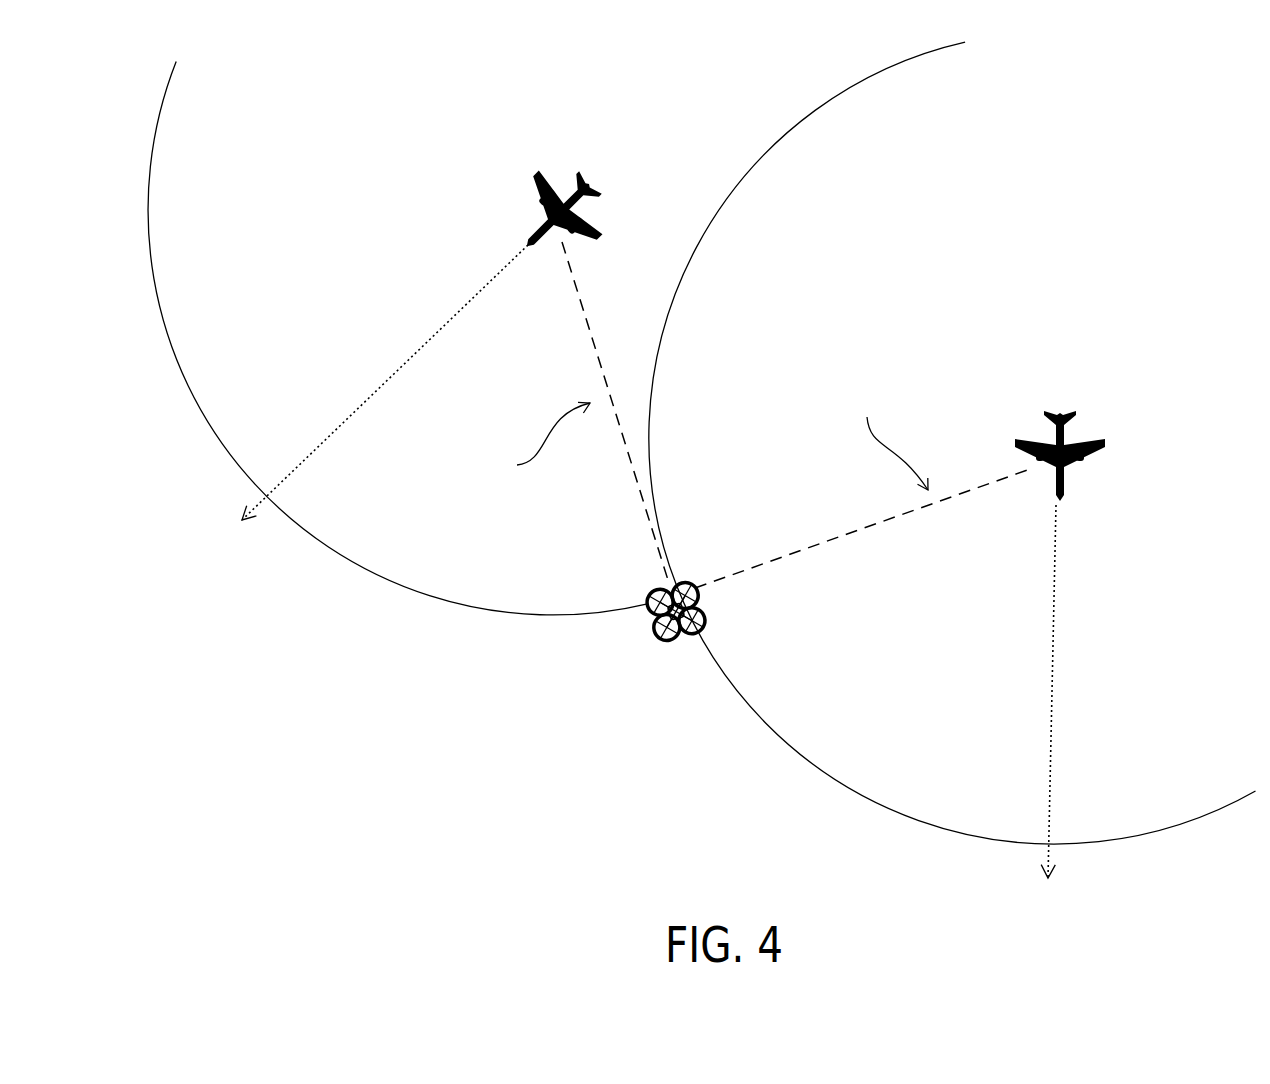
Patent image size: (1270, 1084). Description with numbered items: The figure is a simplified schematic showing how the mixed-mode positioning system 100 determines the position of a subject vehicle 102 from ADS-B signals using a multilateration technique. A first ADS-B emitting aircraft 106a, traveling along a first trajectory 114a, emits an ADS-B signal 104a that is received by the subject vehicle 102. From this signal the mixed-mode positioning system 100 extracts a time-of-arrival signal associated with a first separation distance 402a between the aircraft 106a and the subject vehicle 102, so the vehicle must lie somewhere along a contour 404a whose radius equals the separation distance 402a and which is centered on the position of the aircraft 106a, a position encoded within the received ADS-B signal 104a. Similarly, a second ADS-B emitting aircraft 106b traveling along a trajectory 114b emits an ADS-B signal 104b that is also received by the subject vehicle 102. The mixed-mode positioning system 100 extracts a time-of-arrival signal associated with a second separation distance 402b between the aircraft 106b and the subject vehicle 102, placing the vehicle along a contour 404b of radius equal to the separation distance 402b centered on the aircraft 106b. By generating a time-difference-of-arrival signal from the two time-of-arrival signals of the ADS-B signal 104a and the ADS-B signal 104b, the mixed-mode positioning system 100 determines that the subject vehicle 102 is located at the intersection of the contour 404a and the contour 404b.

The mixed-mode positioning system 100 is at (634, 670).
The subject vehicle 102 is at (653, 637).
The ADS-B signal 104a is at (585, 307).
The ADS-B signal 104b is at (865, 528).
The first ADS-B emitting aircraft 106a is at (528, 185).
The second ADS-B emitting aircraft 106b is at (1068, 413).
The first trajectory 114a is at (403, 362).
The trajectory 114b is at (1057, 746).
The first separation distance 402a is at (524, 443).
The second separation distance 402b is at (883, 441).
The contour 404a is at (408, 587).
The contour 404b is at (788, 747).